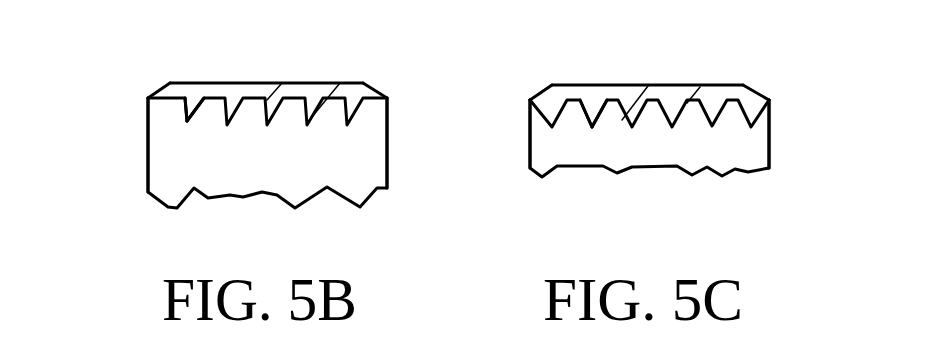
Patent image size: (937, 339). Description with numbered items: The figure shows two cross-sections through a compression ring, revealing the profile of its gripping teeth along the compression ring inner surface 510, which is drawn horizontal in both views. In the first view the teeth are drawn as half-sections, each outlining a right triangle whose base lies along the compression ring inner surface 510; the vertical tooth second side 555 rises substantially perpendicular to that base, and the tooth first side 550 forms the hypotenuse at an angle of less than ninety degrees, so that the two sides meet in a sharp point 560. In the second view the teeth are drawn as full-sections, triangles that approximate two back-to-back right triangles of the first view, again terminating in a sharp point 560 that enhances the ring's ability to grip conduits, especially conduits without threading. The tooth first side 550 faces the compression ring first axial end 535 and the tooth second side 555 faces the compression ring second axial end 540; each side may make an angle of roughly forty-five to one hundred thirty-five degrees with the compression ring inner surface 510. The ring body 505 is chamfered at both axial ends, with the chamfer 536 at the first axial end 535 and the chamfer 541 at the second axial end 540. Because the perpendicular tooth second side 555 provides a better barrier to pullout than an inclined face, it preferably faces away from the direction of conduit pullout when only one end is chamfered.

In FIG. 5B, the body 505 is at (300, 83).
In FIG. 5C, the body 505 is at (567, 85).
In FIG. 5B, the compression ring inner surface 510 is at (370, 102).
In FIG. 5C, the compression ring inner surface 510 is at (732, 102).
In FIG. 5B, the compression ring first axial end 535 is at (388, 124).
In FIG. 5C, the compression ring first axial end 535 is at (771, 137).
In FIG. 5B, the chamfer 536 is at (372, 86).
In FIG. 5C, the chamfer 536 is at (542, 91).
In FIG. 5B, the compression ring second axial end 540 is at (148, 145).
In FIG. 5C, the compression ring second axial end 540 is at (530, 135).
In FIG. 5B, the chamfer 541 is at (163, 88).
In FIG. 5B, the tooth first side 550 is at (190, 118).
In FIG. 5C, the tooth first side 550 is at (616, 108).
In FIG. 5B, the tooth second side 555 is at (198, 108).
In FIG. 5C, the tooth second side 555 is at (592, 85).
In FIG. 5B, the sharp point 560 is at (198, 104).
In FIG. 5C, the sharp point 560 is at (592, 127).